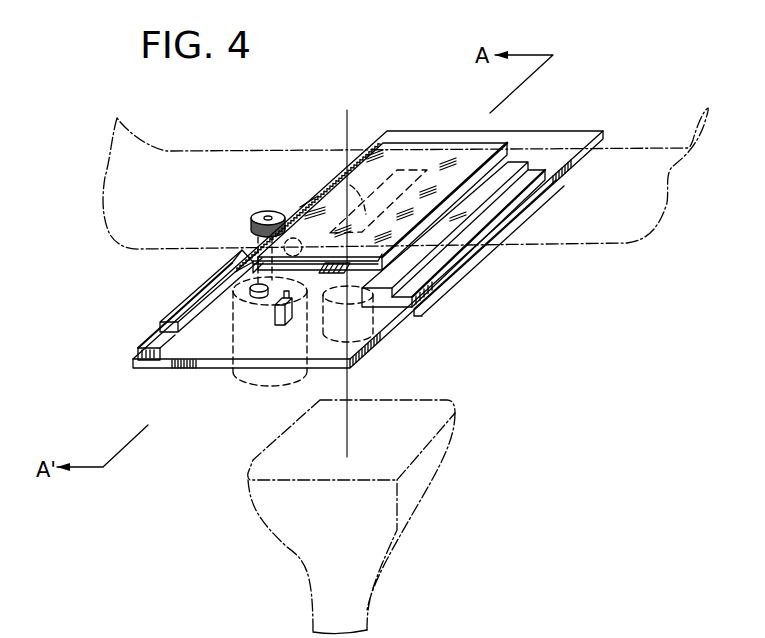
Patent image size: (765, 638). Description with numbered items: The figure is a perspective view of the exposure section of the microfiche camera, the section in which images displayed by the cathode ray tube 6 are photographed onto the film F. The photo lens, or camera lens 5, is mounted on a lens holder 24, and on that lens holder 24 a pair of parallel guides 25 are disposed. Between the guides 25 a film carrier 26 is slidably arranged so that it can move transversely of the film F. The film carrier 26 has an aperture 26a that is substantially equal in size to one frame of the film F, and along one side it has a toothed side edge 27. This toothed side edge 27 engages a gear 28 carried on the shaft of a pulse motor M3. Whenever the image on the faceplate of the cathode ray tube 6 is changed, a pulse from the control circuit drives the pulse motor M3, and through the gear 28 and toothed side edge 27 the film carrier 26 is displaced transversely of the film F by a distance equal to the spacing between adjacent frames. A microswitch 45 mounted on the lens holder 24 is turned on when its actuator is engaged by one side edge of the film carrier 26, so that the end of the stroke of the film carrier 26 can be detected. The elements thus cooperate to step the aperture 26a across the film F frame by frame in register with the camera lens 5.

The camera lens 5 is at (378, 328).
The cathode ray tube 6 is at (420, 447).
The lens holder 24 is at (393, 308).
The parallel guides 25 is at (188, 302).
The film carrier 26 is at (428, 157).
The aperture 26a is at (342, 178).
The toothed side edge 27 is at (305, 205).
The gear 28 is at (252, 217).
The microswitch 45 is at (273, 315).
The pulse motor M3 is at (250, 377).
The film F is at (565, 232).